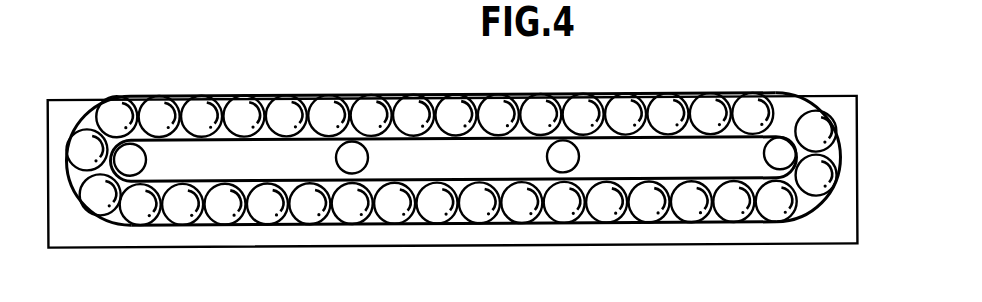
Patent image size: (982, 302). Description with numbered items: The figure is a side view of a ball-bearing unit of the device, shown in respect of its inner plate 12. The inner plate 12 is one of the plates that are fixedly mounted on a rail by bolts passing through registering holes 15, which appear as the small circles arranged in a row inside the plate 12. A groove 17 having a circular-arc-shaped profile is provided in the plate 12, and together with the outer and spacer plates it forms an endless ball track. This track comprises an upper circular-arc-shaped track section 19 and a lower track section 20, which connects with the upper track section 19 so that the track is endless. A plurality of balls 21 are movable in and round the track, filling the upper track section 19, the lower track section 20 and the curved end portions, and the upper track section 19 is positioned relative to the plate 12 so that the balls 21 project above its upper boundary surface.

The inner plate 12 is at (152, 238).
The registering holes 15 is at (130, 158).
The groove 17 is at (93, 118).
The upper circular-arc-shaped track section 19 is at (787, 117).
The lower track section 20 is at (753, 223).
The balls 21 is at (414, 100).